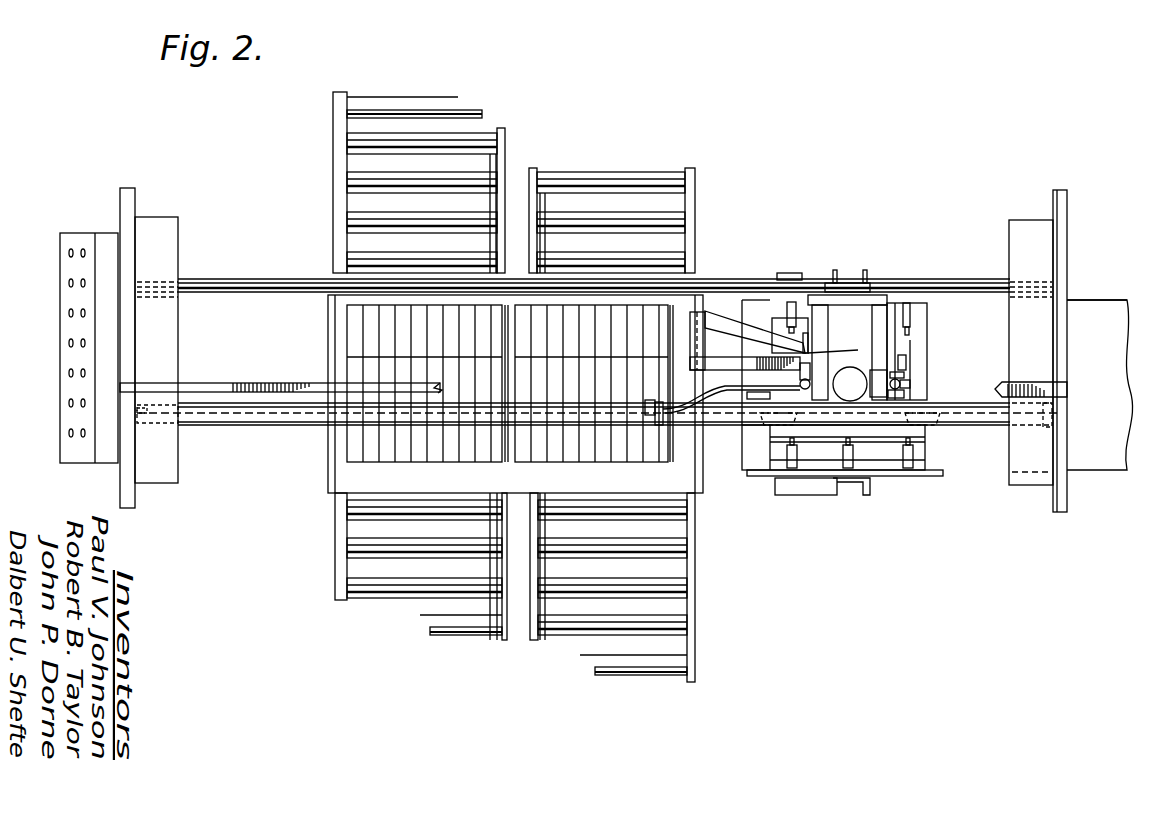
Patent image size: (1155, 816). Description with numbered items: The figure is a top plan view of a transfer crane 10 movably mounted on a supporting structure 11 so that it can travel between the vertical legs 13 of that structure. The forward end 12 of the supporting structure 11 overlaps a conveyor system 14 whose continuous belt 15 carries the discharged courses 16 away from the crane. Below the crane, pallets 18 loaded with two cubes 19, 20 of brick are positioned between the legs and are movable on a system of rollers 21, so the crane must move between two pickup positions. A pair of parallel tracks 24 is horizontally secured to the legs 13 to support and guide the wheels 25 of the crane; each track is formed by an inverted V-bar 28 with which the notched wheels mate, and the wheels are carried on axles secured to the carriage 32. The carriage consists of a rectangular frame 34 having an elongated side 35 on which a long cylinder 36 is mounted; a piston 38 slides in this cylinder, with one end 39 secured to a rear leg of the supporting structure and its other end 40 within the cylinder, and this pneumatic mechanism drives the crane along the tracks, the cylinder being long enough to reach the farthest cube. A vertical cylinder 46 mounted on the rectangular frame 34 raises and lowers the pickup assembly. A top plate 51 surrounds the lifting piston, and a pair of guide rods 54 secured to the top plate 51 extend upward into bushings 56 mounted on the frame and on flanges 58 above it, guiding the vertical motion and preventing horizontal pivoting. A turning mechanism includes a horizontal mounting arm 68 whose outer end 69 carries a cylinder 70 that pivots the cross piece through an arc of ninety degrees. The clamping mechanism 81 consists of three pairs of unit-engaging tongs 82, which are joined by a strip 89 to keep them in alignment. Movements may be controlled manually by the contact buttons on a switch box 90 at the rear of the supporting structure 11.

The transfer crane 10 is at (913, 208).
The supporting structure 11 is at (192, 272).
The forward end 12 is at (1070, 226).
The vertical legs 13 is at (160, 483).
The conveyor system 14 is at (1085, 298).
The continuous belt 15 is at (1112, 359).
The discharged courses 16 is at (925, 448).
The pallet 18 is at (340, 490).
The cube 19 is at (355, 340).
The cube 20 is at (699, 293).
The rollers 21 is at (515, 145).
The parallel tracks 24 is at (262, 279).
The wheels 25 is at (848, 282).
The inverted V-bar 28 is at (953, 290).
The carriage 32 is at (896, 315).
The rectangular frame 34 is at (880, 298).
The elongated side 35 is at (970, 396).
The long cylinder 36 is at (968, 423).
The piston 38 is at (264, 423).
The piston end 39 is at (140, 424).
The piston end 40 is at (656, 427).
The vertical cylinder 46 is at (853, 368).
The top plate 51 is at (908, 366).
The guide rods 54 is at (905, 376).
The bushings 56 is at (908, 383).
The flanges 58 is at (905, 390).
The horizontal mounting arm 68 is at (718, 394).
The outer end 69 is at (745, 341).
The cylinder 70 is at (723, 318).
The clamping mechanism 81 is at (930, 330).
The tongs 82 is at (897, 468).
The strip 89 is at (886, 477).
The switch box 90 is at (60, 305).